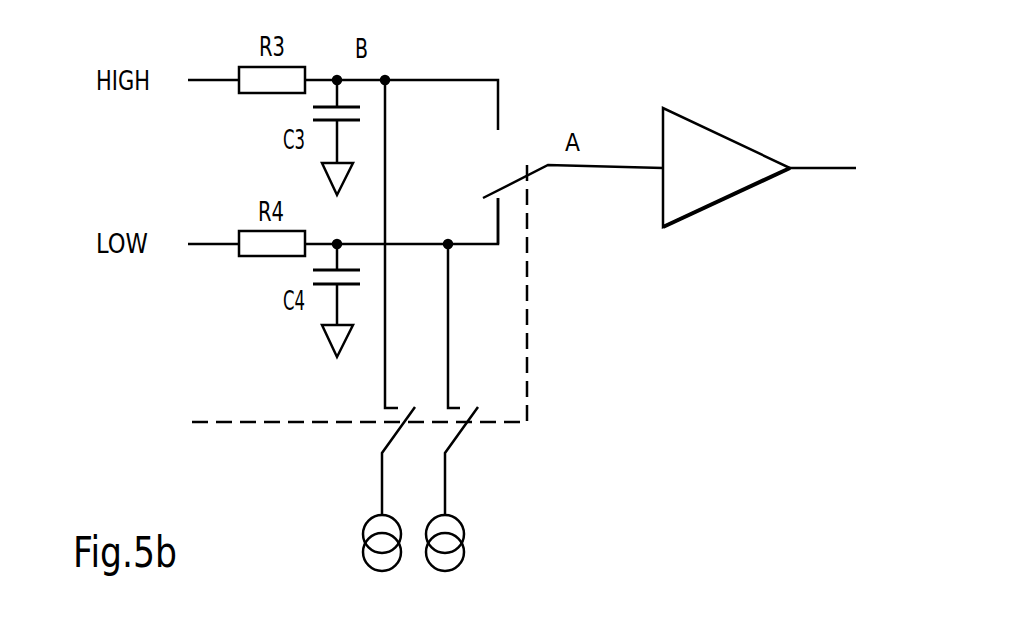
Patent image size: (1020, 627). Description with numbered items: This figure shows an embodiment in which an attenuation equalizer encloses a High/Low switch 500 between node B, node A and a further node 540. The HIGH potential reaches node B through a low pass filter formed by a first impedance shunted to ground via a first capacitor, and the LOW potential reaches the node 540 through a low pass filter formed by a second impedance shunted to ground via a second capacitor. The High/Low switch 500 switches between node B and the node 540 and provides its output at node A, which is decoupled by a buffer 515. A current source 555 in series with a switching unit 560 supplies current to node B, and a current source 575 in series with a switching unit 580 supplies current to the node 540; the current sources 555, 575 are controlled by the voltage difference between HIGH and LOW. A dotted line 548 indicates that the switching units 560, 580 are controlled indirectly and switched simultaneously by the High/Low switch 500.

The High/Low switch 500 is at (515, 178).
The buffer 515 is at (738, 140).
The further node 540 is at (461, 221).
The dotted line 548 is at (528, 320).
The current source 555 is at (362, 536).
The switching unit 560 is at (370, 461).
The current source 575 is at (465, 536).
The switching unit 580 is at (484, 461).